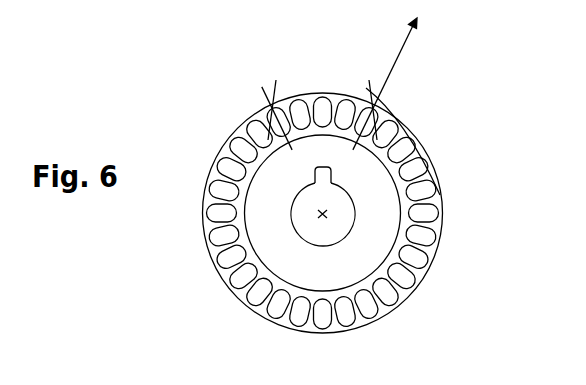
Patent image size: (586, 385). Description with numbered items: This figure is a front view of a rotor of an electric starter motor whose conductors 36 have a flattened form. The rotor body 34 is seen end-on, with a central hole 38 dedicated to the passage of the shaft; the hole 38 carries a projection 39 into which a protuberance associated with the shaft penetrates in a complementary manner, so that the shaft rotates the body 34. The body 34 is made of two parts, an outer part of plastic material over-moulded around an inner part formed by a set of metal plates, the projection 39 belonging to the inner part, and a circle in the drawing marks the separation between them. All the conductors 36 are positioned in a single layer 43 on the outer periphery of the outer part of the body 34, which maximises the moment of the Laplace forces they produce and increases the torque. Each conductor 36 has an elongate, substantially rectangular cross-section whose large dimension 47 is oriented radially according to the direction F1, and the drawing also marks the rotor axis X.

The body 34 is at (238, 83).
The conductors 36 is at (418, 120).
The hole 38 is at (300, 236).
The projection 39 is at (314, 173).
The single layer 43 is at (432, 276).
The large dimension 47 is at (290, 150).
The direction F1 is at (396, 60).
The axis X is at (323, 214).